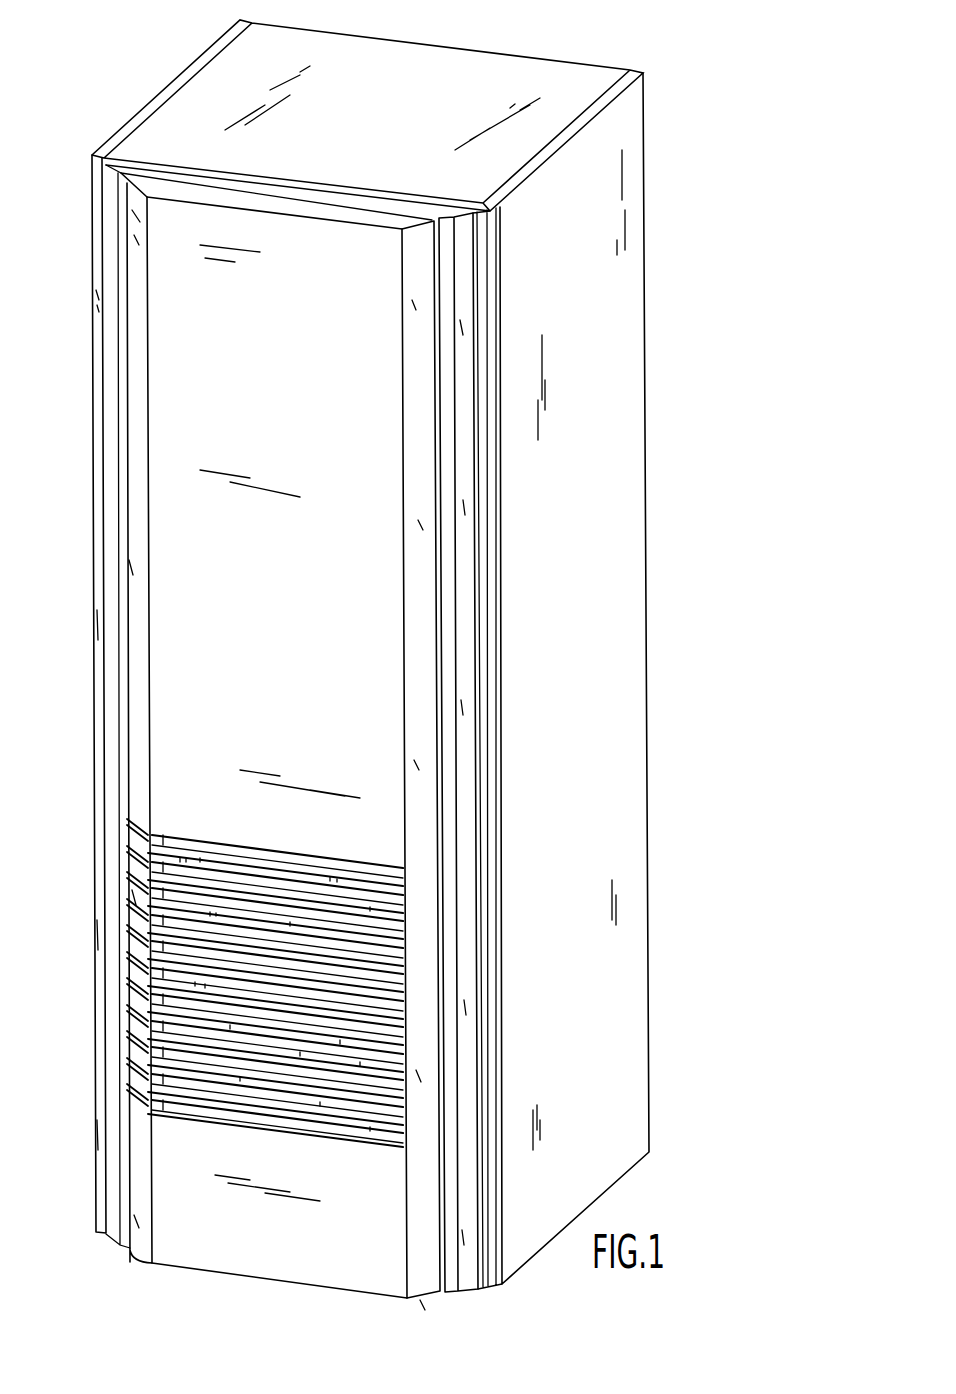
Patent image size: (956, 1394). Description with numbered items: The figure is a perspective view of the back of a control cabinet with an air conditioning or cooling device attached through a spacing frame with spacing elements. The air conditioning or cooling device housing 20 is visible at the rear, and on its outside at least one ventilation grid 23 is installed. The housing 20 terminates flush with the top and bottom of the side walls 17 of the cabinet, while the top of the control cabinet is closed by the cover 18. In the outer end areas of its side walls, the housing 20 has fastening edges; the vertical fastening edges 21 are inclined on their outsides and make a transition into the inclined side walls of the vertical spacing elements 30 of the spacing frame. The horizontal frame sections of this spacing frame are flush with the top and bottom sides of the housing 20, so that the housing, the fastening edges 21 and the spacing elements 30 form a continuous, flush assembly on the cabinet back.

The side walls 17 is at (97, 246).
The cover 18 is at (553, 85).
The air conditioning or cooling device housing 20 is at (175, 768).
The vertical fastening edges 21 is at (135, 392).
The ventilation grid 23 is at (197, 992).
The vertical spacing elements 30 is at (462, 570).